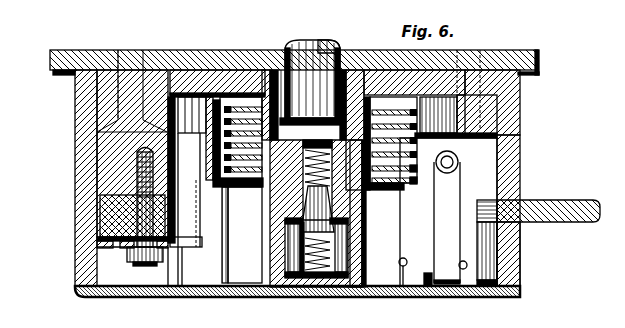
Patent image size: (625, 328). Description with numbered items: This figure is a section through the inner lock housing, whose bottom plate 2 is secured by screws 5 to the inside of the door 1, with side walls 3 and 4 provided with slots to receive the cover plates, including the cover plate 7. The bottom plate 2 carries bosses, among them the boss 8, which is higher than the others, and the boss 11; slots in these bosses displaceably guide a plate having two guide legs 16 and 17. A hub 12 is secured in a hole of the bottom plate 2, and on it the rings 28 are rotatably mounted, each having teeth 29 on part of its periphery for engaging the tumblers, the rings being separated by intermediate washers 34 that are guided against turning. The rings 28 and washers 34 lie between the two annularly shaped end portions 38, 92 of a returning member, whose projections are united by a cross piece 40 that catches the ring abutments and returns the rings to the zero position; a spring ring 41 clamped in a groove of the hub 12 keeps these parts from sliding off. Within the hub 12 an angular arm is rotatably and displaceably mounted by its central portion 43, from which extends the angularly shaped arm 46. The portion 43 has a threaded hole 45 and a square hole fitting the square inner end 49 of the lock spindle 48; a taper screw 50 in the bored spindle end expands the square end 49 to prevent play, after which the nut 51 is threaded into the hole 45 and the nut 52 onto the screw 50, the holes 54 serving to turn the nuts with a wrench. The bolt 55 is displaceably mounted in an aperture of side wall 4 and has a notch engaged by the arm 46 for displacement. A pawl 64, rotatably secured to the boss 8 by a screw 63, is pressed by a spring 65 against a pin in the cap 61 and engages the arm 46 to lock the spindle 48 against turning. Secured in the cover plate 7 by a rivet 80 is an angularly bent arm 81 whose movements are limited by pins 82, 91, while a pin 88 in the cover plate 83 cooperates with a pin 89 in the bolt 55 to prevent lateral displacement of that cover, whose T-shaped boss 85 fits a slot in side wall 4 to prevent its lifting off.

The door 1 is at (508, 60).
The bottom plate 2 is at (172, 76).
The side wall 3 is at (80, 268).
The side wall 4 is at (520, 183).
The screws 5 is at (129, 52).
The cover plate 7 is at (485, 147).
The boss 8 is at (105, 170).
The boss 11 is at (522, 99).
The hub 12 is at (268, 71).
The guide leg 16 is at (193, 98).
The guide leg 17 is at (369, 53).
The rings 28 is at (394, 172).
The teeth 29 is at (403, 174).
The intermediate washers 34 is at (396, 176).
The annularly shaped end portion 38 is at (247, 235).
The cross piece 40 is at (217, 71).
The spring ring 41 is at (377, 192).
The central portion 43 is at (362, 297).
The threaded hole 45 is at (362, 223).
The angularly shaped arm 46 is at (226, 297).
The lock spindle 48 is at (312, 53).
The square inner end 49 is at (318, 118).
The taper screw 50 is at (307, 297).
The nut 51 is at (290, 241).
The nut 52 is at (282, 294).
The holes 54 is at (337, 297).
The bolt 55 is at (582, 200).
The cap 61 is at (103, 212).
The screw 63 is at (146, 293).
The pawl 64 is at (181, 290).
The spring 65 is at (78, 242).
The rivet 80 is at (458, 162).
The angularly bent arm 81 is at (449, 293).
The pin 82 is at (478, 293).
The cover plate 83 is at (109, 290).
The T-shaped boss 85 is at (520, 279).
The pin 88 is at (429, 297).
The pin 89 is at (520, 242).
The pin 91 is at (402, 297).
The annularly shaped end portion 92 is at (246, 71).